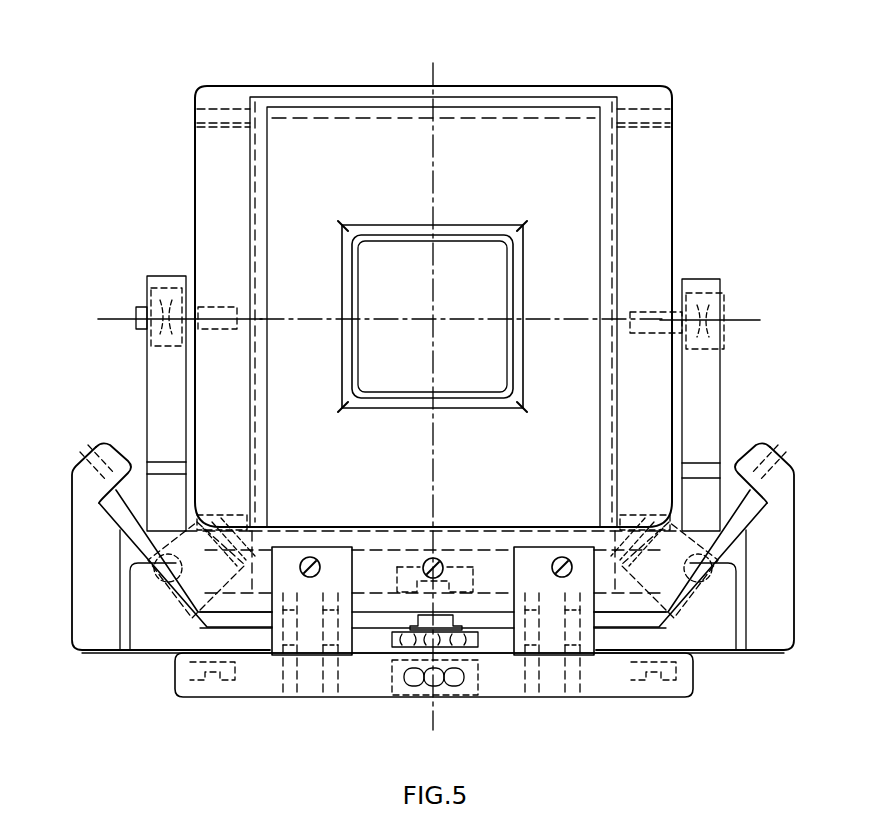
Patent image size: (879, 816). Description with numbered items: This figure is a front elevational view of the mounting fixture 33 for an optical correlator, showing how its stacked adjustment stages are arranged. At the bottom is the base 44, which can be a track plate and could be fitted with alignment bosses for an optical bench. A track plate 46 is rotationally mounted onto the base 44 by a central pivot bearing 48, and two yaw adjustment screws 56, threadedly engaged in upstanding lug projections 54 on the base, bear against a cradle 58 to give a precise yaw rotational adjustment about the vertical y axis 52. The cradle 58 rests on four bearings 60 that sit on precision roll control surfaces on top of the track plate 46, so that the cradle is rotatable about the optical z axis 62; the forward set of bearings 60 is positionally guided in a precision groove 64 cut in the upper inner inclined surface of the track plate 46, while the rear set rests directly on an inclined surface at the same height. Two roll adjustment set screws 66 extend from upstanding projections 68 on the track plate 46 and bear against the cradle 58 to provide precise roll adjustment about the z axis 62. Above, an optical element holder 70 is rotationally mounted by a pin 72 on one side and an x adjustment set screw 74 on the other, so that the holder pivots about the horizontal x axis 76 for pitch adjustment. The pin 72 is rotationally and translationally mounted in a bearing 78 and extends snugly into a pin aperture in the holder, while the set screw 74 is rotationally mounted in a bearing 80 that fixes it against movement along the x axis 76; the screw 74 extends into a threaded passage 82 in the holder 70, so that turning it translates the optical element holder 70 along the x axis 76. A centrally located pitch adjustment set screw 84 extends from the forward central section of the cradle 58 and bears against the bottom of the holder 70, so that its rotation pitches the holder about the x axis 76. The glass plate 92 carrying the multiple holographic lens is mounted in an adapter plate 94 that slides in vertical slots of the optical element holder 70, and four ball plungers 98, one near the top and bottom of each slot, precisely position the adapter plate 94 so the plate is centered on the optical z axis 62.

The mounting fixture 33 is at (697, 151).
The base 44 is at (692, 685).
The track plate 46 is at (796, 641).
The central pivot bearing 48 is at (475, 640).
The y axis 52 is at (436, 72).
The upstanding lug projections 54 is at (355, 646).
The yaw adjustment screws 56 is at (320, 559).
The cradle 58 is at (722, 397).
The bearings 60 is at (172, 603).
The optical z axis 62 is at (436, 322).
The precision groove 64 is at (712, 588).
The roll adjustment set screws 66 is at (82, 458).
The upstanding projections 68 is at (71, 508).
The optical element holder 70 is at (674, 193).
The pin 72 is at (652, 310).
The x adjustment set screw 74 is at (140, 314).
The x axis 76 is at (743, 319).
The bearing 78 is at (693, 352).
The bearing 80 is at (178, 290).
The threaded passage 82 is at (217, 331).
The pitch adjustment set screw 84 is at (432, 558).
The glass plate 92 is at (409, 284).
The adapter plate 94 is at (341, 194).
The ball plungers 98 is at (208, 110).